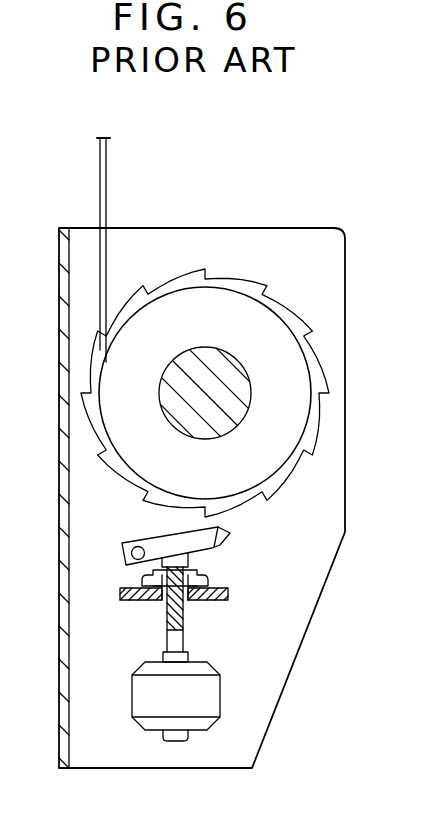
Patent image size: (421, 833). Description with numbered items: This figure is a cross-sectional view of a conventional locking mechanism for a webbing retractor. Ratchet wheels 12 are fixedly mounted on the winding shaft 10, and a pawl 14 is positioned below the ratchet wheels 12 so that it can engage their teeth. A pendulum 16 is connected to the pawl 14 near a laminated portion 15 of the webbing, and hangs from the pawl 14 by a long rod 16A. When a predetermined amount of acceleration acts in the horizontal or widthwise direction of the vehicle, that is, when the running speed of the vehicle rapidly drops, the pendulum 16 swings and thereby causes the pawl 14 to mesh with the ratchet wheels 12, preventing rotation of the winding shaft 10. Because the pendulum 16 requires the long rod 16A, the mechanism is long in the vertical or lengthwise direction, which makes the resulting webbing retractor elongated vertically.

The winding shaft 10 is at (197, 358).
The ratchet wheels 12 is at (255, 287).
The laminated portion of the webbing 15 is at (278, 445).
The pawl 14 is at (212, 546).
The long rod 16A is at (182, 640).
The pendulum 16 is at (207, 698).